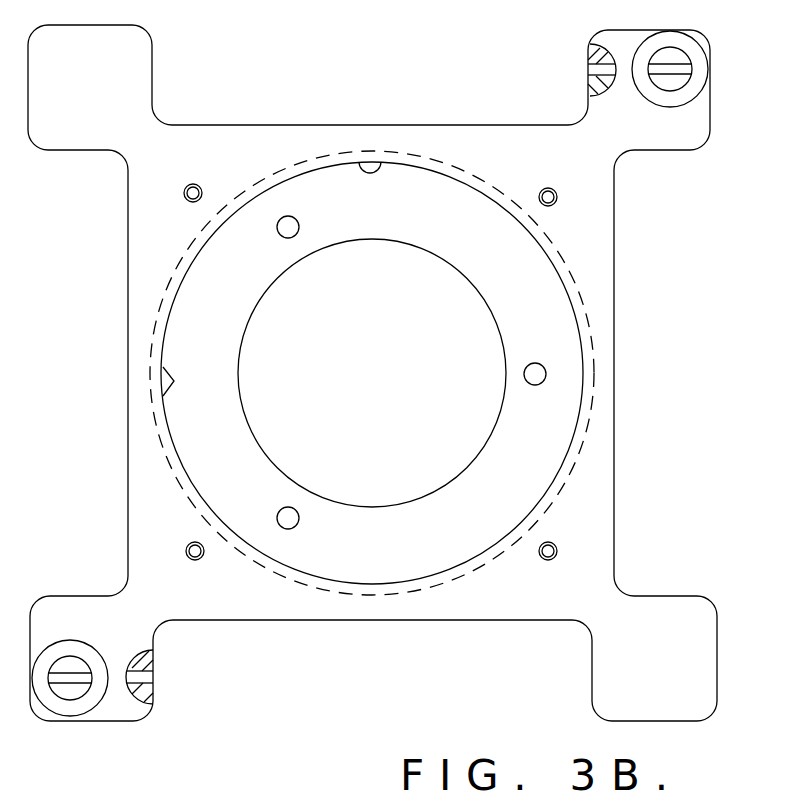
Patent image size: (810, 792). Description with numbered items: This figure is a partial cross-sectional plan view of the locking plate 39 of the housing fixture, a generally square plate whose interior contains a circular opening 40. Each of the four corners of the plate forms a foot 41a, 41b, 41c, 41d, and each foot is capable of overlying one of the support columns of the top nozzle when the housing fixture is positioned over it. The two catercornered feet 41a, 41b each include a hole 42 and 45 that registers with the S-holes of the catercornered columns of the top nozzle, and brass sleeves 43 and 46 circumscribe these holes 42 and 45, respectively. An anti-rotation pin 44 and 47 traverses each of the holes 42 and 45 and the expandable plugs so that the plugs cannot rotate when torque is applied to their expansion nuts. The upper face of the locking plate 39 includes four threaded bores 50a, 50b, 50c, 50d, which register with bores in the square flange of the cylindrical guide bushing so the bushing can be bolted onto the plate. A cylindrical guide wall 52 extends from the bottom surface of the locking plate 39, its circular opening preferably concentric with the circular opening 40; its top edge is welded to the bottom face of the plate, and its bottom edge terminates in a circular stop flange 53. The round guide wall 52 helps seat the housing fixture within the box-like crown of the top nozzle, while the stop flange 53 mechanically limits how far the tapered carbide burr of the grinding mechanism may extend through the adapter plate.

The locking plate 39 is at (224, 143).
The circular opening 40 is at (163, 399).
The foot 41a is at (122, 705).
The foot 41b is at (678, 137).
The foot 41c is at (678, 625).
The foot 41d is at (122, 55).
The hole 42 is at (83, 668).
The brass sleeve 43 is at (65, 648).
The anti-rotation pin 44 is at (140, 681).
The hole 45 is at (673, 80).
The brass sleeve 46 is at (662, 42).
The anti-rotation pin 47 is at (600, 70).
The threaded bore 50a is at (193, 562).
The threaded bore 50b is at (555, 200).
The threaded bore 50c is at (556, 550).
The threaded bore 50d is at (185, 195).
The cylindrical guide wall 52 is at (357, 168).
The circular stop flange 53 is at (220, 387).